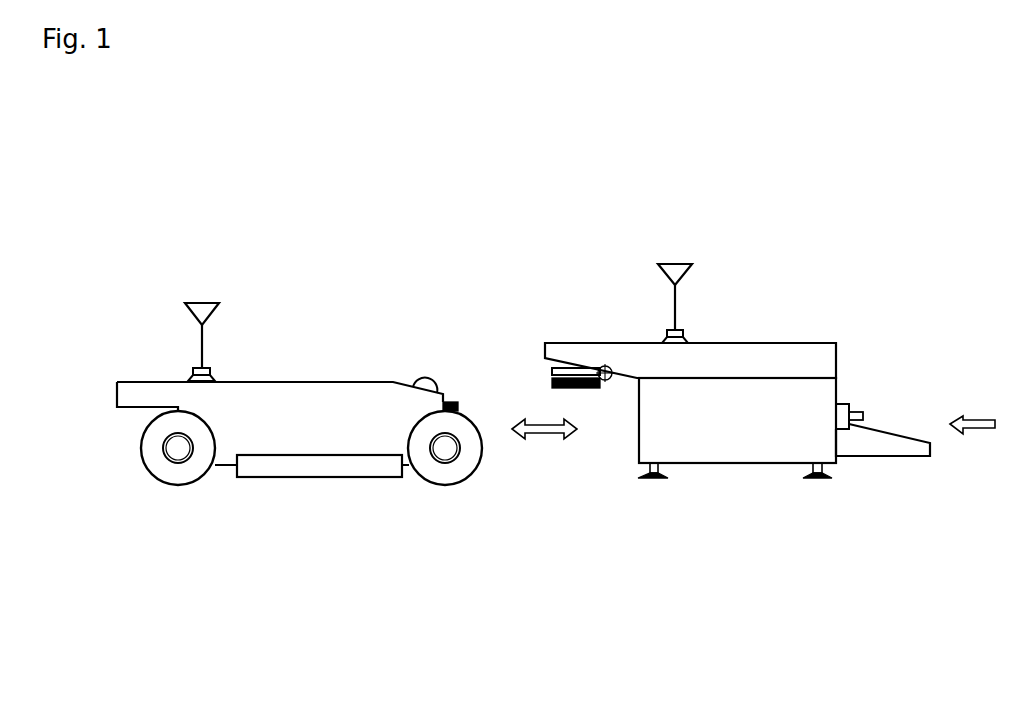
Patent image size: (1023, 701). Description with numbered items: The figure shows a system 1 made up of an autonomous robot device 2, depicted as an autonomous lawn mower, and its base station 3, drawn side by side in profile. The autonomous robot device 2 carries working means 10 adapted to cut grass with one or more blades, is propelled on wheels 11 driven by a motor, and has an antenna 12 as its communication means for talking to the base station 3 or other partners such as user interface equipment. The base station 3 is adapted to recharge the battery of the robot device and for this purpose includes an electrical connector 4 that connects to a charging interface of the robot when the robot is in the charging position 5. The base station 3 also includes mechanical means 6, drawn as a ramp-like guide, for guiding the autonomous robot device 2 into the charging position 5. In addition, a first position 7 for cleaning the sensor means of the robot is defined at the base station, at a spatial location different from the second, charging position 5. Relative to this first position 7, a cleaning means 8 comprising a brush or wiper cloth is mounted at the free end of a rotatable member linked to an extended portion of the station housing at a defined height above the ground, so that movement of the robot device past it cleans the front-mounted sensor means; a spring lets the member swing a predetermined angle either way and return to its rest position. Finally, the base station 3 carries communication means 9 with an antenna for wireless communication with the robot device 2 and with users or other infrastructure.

The system 1 is at (479, 170).
The autonomous robot device 2 is at (329, 381).
The base station 3 is at (820, 343).
The electrical connector 4 is at (855, 404).
The charging position 5 is at (872, 571).
The mechanical means 6 is at (912, 452).
The first position 7 is at (576, 525).
The cleaning means 8 is at (590, 389).
The communication means 9 is at (683, 258).
The working means 10 is at (312, 478).
The wheels 11 is at (167, 484).
The antenna 12 is at (212, 303).